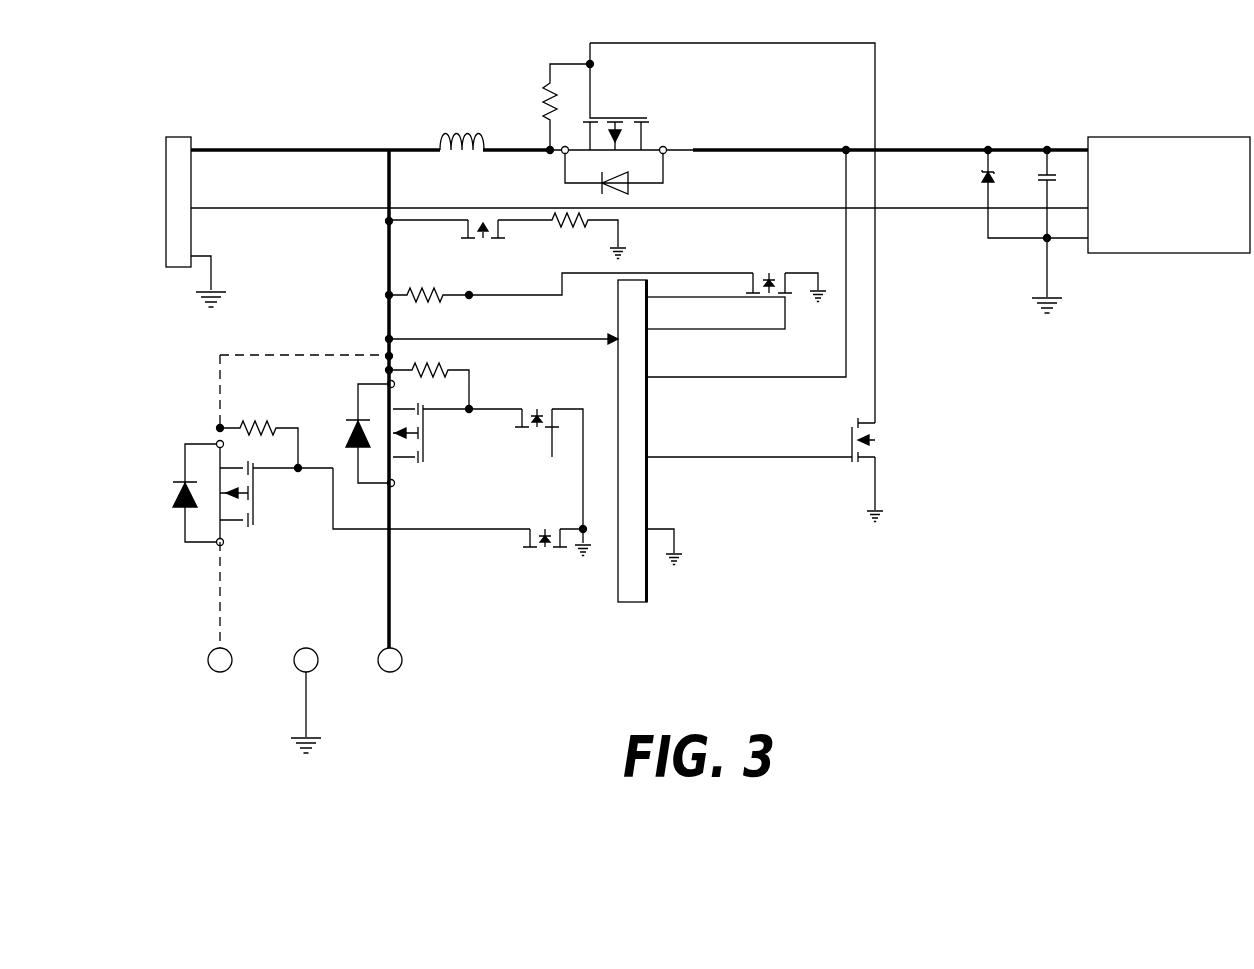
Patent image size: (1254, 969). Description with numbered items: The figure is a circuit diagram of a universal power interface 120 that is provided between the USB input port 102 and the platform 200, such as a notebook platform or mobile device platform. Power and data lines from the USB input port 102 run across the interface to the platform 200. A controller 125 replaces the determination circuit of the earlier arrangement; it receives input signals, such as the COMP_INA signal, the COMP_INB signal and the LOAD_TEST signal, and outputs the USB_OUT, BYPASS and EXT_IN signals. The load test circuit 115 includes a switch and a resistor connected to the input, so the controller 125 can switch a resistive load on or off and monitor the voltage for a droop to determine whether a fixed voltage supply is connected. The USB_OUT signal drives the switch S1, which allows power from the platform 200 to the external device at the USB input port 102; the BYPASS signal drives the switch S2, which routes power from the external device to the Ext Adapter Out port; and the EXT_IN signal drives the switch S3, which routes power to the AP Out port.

The universal power interface 120 is at (357, 102).
The USB input port 102 is at (168, 268).
The load test circuit 115 is at (532, 220).
The switch S1 is at (685, 172).
The switch S2 is at (228, 533).
The switch S3 is at (398, 462).
The controller 125 is at (636, 602).
The platform 200 is at (1175, 137).